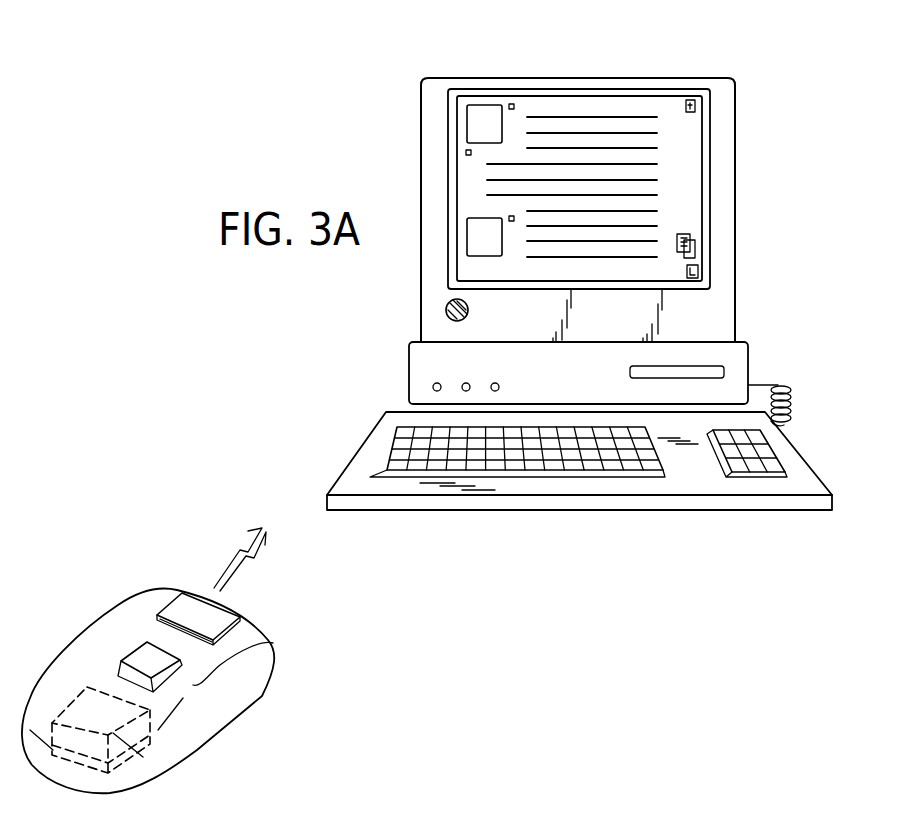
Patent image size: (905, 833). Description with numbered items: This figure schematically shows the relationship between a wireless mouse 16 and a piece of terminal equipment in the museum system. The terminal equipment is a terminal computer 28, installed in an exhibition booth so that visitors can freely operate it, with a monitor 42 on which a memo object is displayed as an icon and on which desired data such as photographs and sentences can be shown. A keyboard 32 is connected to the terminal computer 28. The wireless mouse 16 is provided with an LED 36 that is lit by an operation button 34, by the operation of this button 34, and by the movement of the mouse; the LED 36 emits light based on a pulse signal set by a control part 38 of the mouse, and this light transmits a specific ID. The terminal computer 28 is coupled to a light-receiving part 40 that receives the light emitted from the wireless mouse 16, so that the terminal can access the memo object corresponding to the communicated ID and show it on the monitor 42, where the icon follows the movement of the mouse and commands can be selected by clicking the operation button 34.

The wireless mouse 16 is at (137, 592).
The terminal computer 28 is at (712, 69).
The keyboard 32 is at (789, 458).
The operation button 34 is at (167, 657).
The LED 36 is at (213, 619).
The control part 38 is at (147, 767).
The light-receiving part 40 is at (446, 316).
The monitor 42 is at (617, 102).